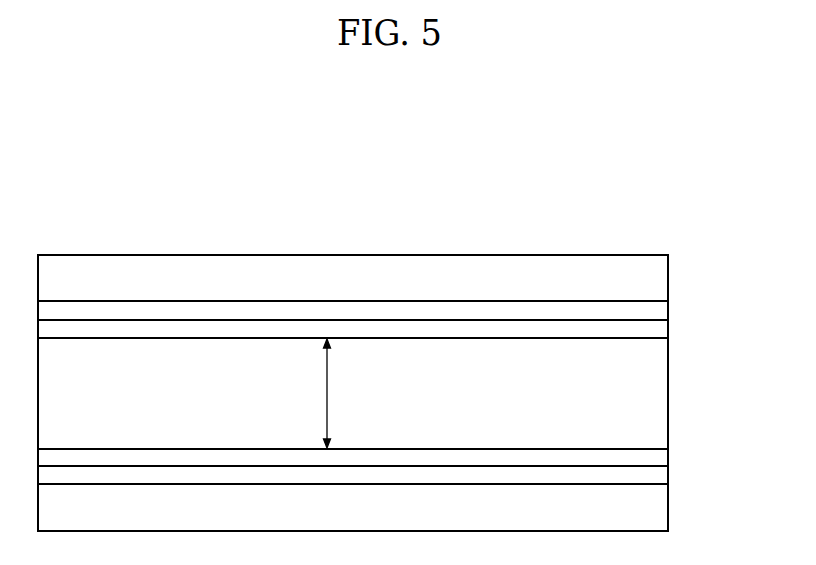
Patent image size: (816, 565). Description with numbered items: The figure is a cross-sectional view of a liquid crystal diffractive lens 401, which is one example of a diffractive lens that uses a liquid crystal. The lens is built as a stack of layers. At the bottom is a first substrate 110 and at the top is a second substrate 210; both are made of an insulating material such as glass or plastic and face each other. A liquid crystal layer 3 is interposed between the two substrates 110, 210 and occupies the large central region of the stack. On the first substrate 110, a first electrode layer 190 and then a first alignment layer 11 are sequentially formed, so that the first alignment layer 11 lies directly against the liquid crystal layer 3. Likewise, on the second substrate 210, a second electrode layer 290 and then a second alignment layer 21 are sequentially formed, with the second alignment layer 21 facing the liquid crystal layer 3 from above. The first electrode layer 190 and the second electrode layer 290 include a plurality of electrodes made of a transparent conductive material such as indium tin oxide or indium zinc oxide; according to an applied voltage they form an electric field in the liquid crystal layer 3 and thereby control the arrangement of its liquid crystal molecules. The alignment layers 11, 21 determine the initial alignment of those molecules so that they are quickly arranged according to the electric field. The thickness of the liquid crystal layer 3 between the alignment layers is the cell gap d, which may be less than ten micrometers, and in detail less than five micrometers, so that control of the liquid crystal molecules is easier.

The liquid crystal diffractive lens 401 is at (369, 182).
The second substrate 210 is at (662, 279).
The second electrode layer 290 is at (662, 312).
The second alignment layer 21 is at (658, 328).
The liquid crystal layer 3 is at (658, 393).
The first alignment layer 11 is at (659, 457).
The first electrode layer 190 is at (662, 476).
The first substrate 110 is at (662, 509).
The cell gap d is at (335, 393).